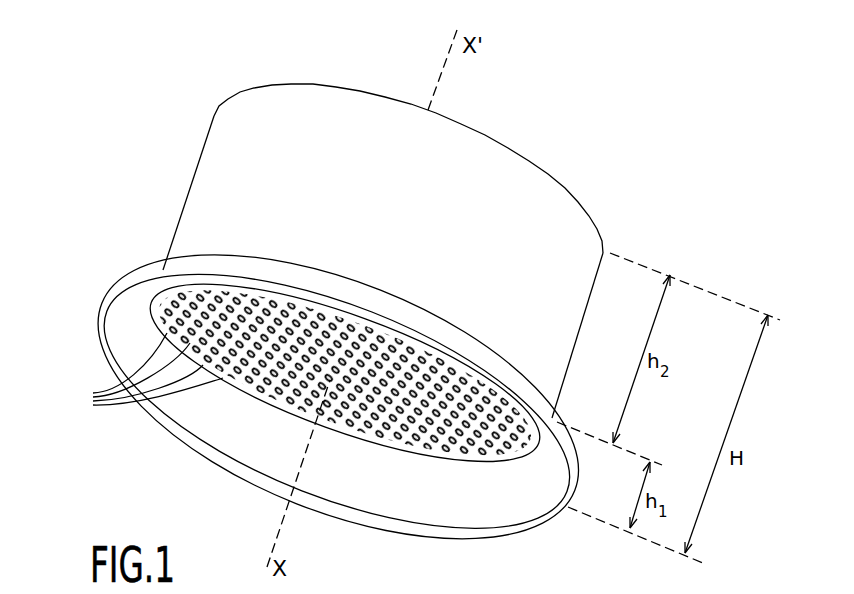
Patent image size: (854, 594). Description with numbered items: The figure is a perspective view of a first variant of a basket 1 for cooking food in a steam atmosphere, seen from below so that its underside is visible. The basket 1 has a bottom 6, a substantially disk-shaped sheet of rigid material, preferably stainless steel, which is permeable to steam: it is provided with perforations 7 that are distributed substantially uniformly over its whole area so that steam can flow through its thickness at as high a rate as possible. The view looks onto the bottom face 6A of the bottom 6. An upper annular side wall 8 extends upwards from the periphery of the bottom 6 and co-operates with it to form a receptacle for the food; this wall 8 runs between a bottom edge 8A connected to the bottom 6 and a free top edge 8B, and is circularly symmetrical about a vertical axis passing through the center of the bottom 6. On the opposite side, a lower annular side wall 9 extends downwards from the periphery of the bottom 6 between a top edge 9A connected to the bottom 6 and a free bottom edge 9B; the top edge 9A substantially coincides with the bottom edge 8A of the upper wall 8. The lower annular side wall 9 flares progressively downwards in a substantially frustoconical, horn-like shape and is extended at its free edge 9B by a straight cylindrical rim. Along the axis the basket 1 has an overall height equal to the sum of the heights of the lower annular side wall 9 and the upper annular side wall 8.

The basket 1 is at (616, 185).
The bottom 6 is at (345, 416).
The bottom face 6A is at (430, 455).
The perforations 7 is at (150, 372).
The upper annular side wall 8 is at (397, 251).
The bottom edge 8A is at (478, 338).
The free top edge 8B is at (500, 143).
The lower annular side wall 9 is at (338, 362).
The top edge 9A is at (318, 270).
The free bottom edge 9B is at (533, 521).